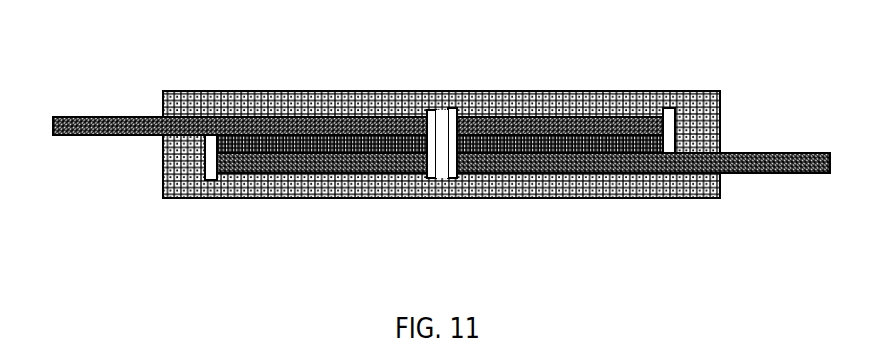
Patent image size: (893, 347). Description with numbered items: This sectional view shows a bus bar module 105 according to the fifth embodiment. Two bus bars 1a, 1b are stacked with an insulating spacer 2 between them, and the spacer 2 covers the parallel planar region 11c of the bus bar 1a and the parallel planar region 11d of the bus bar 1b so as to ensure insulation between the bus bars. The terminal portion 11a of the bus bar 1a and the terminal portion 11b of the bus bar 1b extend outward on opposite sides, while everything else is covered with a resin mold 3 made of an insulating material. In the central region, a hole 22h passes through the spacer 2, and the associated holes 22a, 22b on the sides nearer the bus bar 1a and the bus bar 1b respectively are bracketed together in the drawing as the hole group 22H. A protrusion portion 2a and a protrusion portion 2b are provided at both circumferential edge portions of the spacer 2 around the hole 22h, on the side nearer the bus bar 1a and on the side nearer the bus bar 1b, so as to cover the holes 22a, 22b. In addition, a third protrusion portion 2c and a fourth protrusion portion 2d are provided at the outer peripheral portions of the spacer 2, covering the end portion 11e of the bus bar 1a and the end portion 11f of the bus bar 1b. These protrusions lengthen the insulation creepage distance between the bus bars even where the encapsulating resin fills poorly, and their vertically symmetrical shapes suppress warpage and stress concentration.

The bus bar module 105 is at (727, 46).
The bus bar 1a is at (610, 172).
The bus bar 1b is at (520, 116).
The spacer 2 is at (677, 140).
The protrusion portion 2a is at (430, 180).
The protrusion portion 2b is at (430, 112).
The protrusion portion 2c is at (211, 182).
The protrusion portion 2d is at (672, 110).
The resin mold 3 is at (443, 106).
The terminal portion 11a is at (778, 175).
The terminal portion 11b is at (120, 114).
The parallel planar region 11c is at (372, 172).
The parallel planar region 11d is at (345, 116).
The end portion 11e is at (237, 200).
The end portion 11f is at (658, 117).
The hole 22a is at (463, 140).
The hole 22b is at (510, 158).
The hole 22h is at (437, 172).
The hole group 22H is at (607, 246).